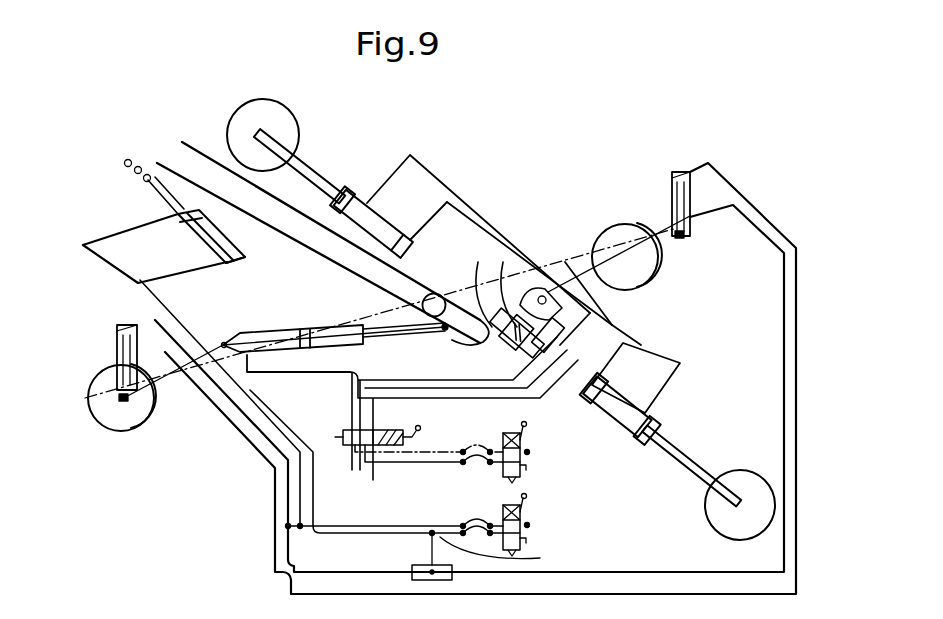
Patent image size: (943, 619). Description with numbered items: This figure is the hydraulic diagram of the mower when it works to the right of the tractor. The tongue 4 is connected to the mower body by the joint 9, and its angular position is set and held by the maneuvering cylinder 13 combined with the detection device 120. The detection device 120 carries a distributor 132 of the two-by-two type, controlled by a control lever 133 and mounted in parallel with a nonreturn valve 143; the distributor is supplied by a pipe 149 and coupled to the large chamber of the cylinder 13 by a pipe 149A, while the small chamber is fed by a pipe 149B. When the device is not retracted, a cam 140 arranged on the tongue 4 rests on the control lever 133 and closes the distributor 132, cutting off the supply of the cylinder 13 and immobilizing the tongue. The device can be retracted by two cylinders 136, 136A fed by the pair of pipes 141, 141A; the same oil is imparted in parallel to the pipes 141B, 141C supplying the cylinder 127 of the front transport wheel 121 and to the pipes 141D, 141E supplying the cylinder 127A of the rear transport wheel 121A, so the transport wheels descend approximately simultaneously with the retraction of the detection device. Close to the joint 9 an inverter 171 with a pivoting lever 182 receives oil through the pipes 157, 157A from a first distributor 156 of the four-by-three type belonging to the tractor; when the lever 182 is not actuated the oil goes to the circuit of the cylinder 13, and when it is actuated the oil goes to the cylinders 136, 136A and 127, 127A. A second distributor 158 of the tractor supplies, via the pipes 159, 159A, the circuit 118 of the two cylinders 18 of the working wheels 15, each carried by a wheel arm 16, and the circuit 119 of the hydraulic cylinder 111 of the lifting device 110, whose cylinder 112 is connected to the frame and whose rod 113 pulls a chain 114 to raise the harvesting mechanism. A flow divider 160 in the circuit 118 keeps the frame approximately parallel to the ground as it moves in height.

The tongue 4 is at (336, 270).
The joint 9 is at (420, 292).
The maneuvering cylinder 13 is at (270, 334).
The working wheel 15 is at (152, 398).
The wheel arm 16 is at (118, 400).
The cylinder of working wheel 18 is at (116, 339).
The lifting device 110 is at (195, 246).
The hydraulic cylinder 111 is at (228, 263).
The cylinder 112 is at (236, 250).
The rod 113 is at (150, 190).
The chain 114 is at (125, 160).
The circuit 118 is at (262, 560).
The circuit 119 is at (128, 299).
The detection device 120 is at (543, 288).
The transport wheel 121 is at (238, 118).
The transport wheel 121A is at (708, 503).
The hydraulic cylinder 127 is at (385, 224).
The hydraulic cylinder 127A is at (640, 389).
The distributor 132 is at (318, 253).
The control lever 133 is at (490, 282).
The cylinder 136 is at (493, 290).
The cylinder 136A is at (560, 350).
The cam 140 is at (468, 294).
The pipe 141 is at (510, 262).
The pipe 141A is at (573, 272).
The pipe 141B is at (458, 205).
The pipe 141C is at (414, 167).
The pipe 141D is at (657, 350).
The pipe 141E is at (641, 322).
The nonreturn valve 143 is at (505, 344).
The pipe 149 is at (404, 380).
The pipe 149A is at (268, 372).
The pipe 149B is at (352, 401).
The first distributor 156 is at (522, 441).
The pipe 157 is at (362, 457).
The pipe 157A is at (420, 465).
The second distributor 158 is at (522, 514).
The pipe 159 is at (364, 526).
The pipe 159A is at (513, 551).
The flow divider 160 is at (412, 569).
The inverter 171 is at (343, 448).
The pivoting lever 182 is at (405, 437).